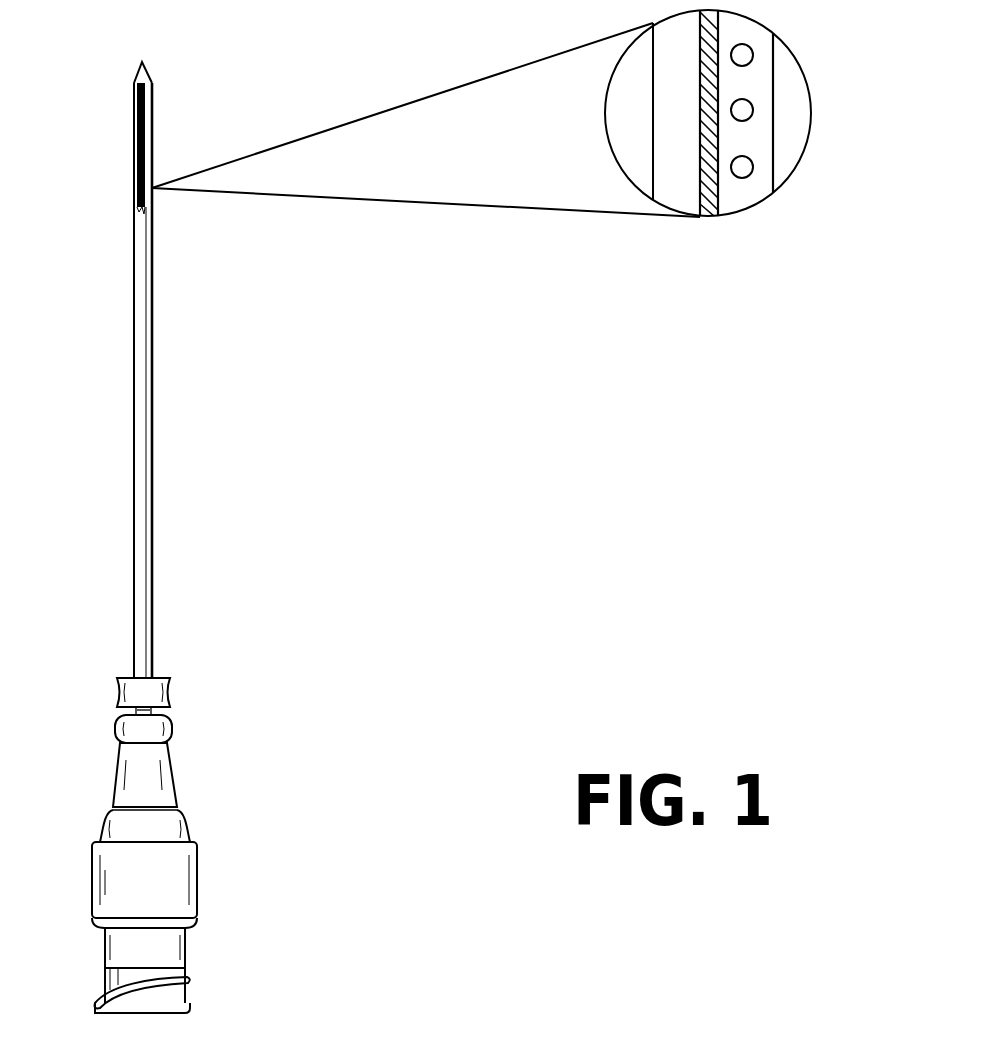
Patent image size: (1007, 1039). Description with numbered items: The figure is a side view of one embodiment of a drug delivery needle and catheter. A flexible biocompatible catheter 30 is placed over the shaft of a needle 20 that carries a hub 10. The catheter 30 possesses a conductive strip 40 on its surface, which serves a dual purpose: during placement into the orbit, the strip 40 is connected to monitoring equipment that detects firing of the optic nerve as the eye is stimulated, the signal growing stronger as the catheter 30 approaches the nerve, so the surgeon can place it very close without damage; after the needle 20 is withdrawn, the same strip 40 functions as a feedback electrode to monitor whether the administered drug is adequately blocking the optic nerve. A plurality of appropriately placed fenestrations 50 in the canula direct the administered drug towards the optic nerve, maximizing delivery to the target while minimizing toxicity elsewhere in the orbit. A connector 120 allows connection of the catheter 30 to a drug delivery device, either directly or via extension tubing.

The hub 10 is at (177, 813).
The needle 20 is at (157, 710).
The flexible biocompatible catheter 30 is at (152, 482).
The conductive strip 40 is at (135, 177).
The fenestrations 50 is at (753, 167).
The connector 120 is at (168, 690).